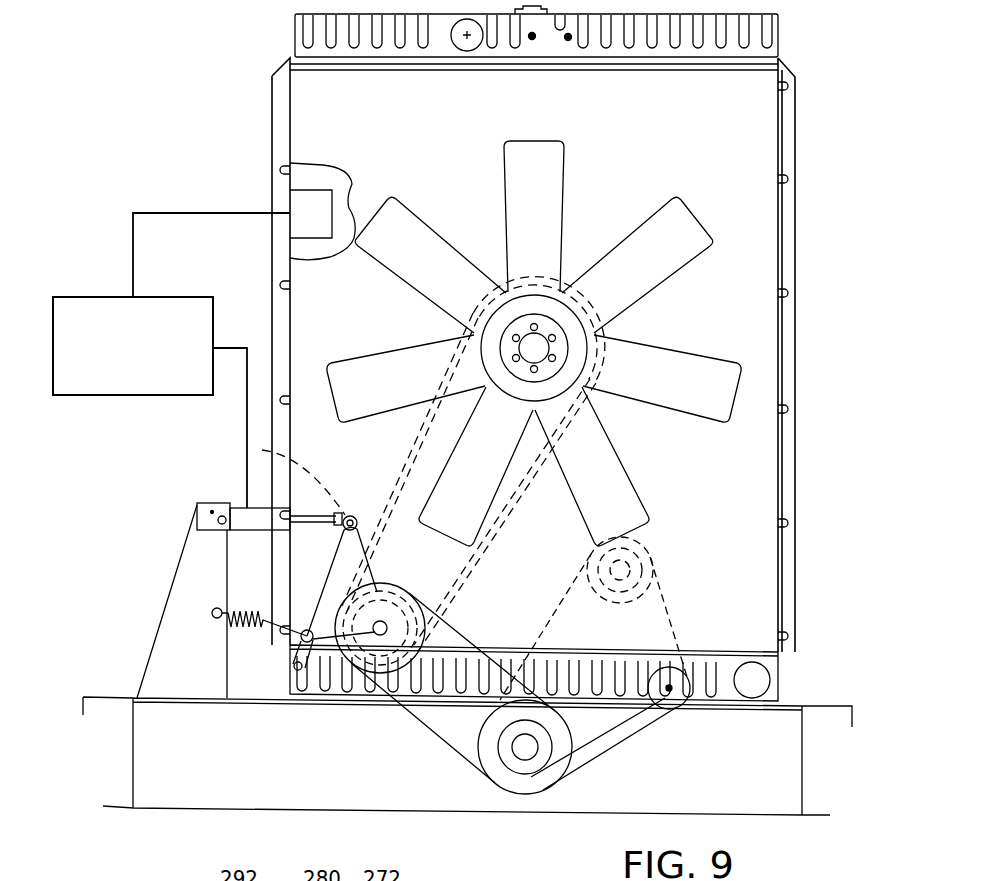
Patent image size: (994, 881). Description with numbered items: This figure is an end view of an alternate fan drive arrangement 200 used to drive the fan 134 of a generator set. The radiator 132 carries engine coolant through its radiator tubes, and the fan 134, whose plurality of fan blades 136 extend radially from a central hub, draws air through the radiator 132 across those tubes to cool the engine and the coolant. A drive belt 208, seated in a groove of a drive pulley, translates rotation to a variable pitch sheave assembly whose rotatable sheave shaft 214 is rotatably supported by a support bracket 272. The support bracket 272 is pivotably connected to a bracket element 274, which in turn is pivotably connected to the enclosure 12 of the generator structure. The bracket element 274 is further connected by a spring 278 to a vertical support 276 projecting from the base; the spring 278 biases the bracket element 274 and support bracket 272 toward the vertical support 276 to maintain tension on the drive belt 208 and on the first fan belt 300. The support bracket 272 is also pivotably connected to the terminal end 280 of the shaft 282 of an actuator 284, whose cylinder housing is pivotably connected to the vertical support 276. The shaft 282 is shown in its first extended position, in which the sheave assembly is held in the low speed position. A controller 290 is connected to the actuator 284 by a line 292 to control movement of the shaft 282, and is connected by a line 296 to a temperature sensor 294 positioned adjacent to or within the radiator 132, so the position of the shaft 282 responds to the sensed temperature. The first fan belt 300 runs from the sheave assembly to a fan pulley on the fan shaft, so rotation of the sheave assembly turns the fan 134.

The enclosure 12 is at (398, 546).
The radiator 132 is at (790, 113).
The fan 134 is at (534, 329).
The fan blades 136 is at (510, 170).
The fan drive arrangement 200 is at (420, 732).
The drive belt 208 is at (478, 752).
The sheave shaft 214 is at (396, 622).
The support bracket 272 is at (355, 515).
The bracket element 274 is at (290, 660).
The vertical support 276 is at (175, 648).
The spring 278 is at (255, 626).
The terminal end 280 is at (262, 450).
The shaft 282 is at (288, 510).
The actuator 284 is at (197, 506).
The controller 290 is at (62, 300).
The line 292 is at (247, 346).
The temperature sensor 294 is at (300, 200).
The line 296 is at (163, 212).
The first fan belt 300 is at (517, 480).